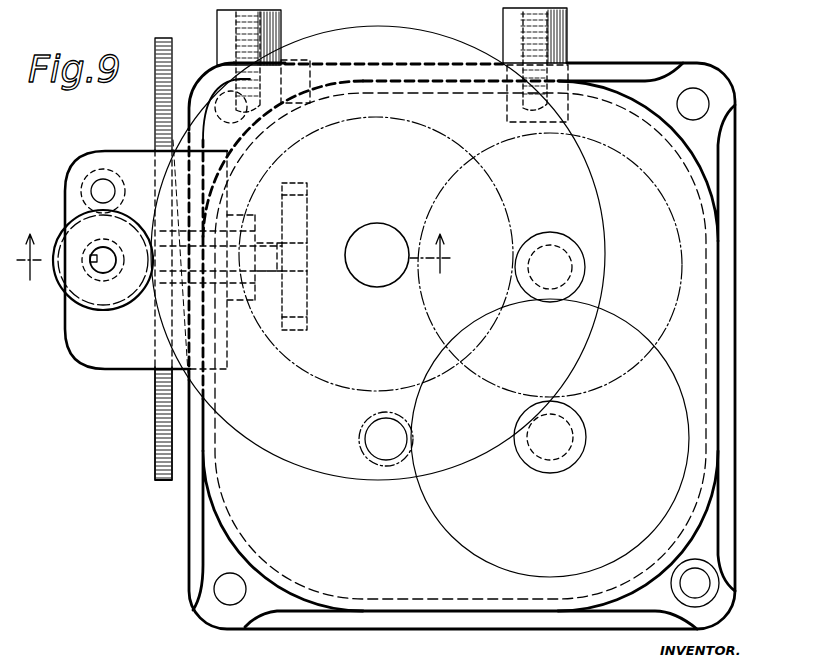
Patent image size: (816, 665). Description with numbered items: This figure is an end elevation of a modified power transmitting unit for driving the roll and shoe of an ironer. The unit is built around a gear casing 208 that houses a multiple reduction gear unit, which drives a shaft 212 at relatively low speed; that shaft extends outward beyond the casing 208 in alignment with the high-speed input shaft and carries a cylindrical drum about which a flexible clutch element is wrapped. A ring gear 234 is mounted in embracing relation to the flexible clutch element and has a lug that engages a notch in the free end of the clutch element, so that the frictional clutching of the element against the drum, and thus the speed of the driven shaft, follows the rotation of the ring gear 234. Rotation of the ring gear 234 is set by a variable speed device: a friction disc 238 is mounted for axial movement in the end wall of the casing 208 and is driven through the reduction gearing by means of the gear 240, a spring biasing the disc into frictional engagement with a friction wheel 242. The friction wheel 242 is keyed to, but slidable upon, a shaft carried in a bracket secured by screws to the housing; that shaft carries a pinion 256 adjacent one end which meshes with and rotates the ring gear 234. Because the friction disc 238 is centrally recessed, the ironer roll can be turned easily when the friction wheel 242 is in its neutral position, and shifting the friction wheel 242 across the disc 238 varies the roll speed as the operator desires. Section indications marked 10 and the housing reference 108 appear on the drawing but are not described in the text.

The section line 10- 10 is at (248, 271).
The housing 108 is at (373, 611).
The gear casing 208 is at (683, 470).
The shaft 212 is at (377, 222).
The ring gear 234 is at (446, 46).
The friction disc 238 is at (153, 442).
The gear 240 is at (309, 315).
The friction wheel 242 is at (62, 292).
The pinion 256 is at (110, 307).